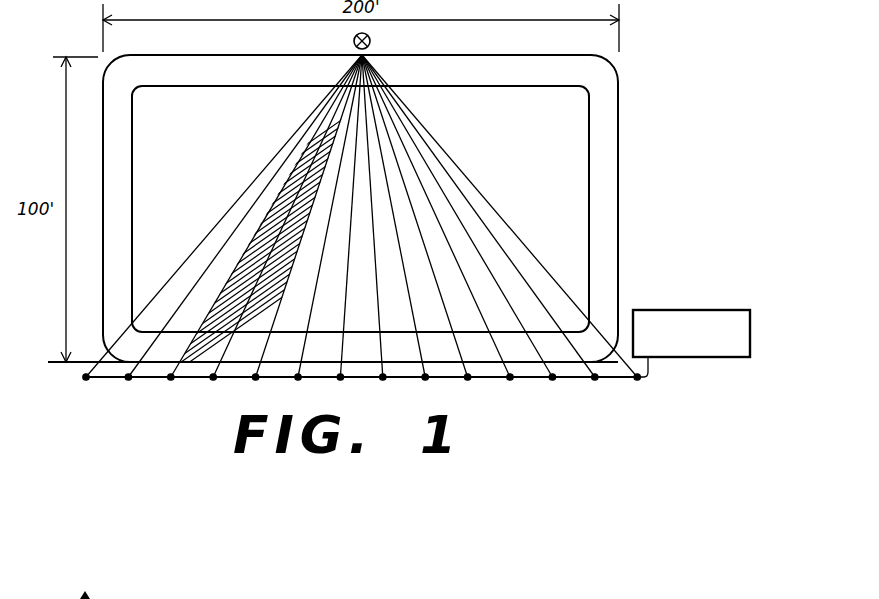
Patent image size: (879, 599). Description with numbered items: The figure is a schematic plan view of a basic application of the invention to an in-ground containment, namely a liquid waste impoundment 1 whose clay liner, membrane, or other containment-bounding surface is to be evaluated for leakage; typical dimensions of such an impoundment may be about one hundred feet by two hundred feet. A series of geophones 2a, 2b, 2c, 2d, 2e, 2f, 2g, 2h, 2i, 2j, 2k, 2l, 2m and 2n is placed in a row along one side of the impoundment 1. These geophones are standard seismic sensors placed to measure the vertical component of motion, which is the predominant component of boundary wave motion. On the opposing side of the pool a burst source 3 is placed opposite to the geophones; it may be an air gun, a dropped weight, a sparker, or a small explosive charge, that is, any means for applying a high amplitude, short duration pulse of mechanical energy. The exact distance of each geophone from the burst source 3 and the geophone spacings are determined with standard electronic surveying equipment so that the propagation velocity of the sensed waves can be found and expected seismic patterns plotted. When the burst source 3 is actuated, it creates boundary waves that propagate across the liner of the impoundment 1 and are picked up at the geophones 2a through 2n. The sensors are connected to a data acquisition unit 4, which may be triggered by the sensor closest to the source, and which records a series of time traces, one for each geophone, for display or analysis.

The liquid waste impoundment 1 is at (189, 172).
The geophone 2a is at (216, 228).
The geophone 2b is at (237, 228).
The geophone 2c is at (259, 228).
The geophone 2d is at (280, 228).
The geophone 2e is at (301, 228).
The geophone 2f is at (323, 228).
The geophone 2g is at (343, 228).
The geophone 2h is at (375, 228).
The geophone 2i is at (395, 228).
The geophone 2j is at (416, 228).
The geophone 2k is at (438, 228).
The geophone 2l is at (459, 228).
The geophone 2m is at (482, 228).
The geophone 2n is at (502, 228).
The burst source 3 is at (354, 41).
The data acquisition unit 4 is at (685, 310).